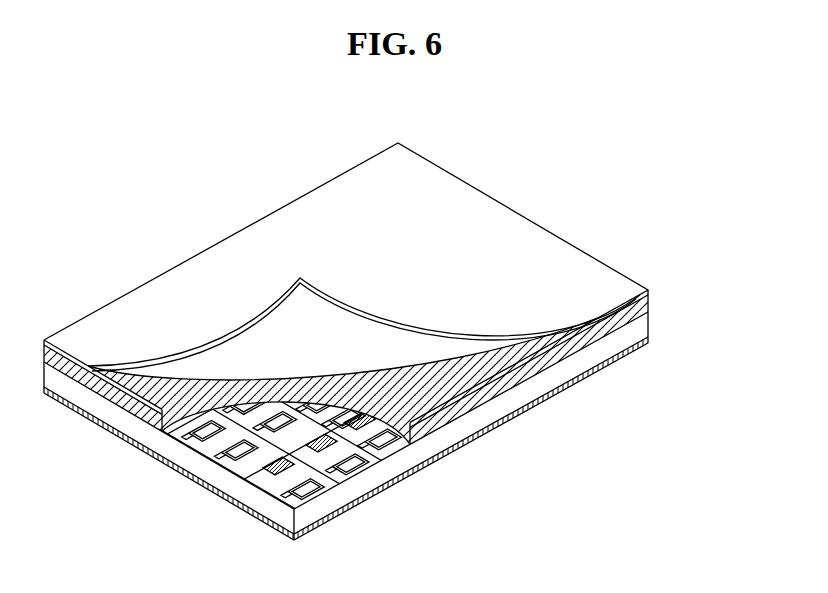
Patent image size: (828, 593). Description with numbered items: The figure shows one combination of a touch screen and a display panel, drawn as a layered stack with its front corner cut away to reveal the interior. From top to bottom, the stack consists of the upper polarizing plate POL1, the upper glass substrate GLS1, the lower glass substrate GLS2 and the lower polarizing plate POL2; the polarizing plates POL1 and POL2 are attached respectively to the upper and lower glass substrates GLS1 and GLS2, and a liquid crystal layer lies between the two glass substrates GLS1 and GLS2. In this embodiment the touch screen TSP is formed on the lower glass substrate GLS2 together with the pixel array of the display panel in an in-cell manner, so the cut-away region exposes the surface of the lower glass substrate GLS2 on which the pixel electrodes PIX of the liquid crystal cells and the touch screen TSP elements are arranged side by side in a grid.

The upper polarizing plate POL1 is at (648, 291).
The upper glass substrate GLS1 is at (648, 303).
The lower glass substrate GLS2 is at (640, 322).
The lower polarizing plate POL2 is at (648, 343).
The touch screen TSP is at (268, 472).
The pixel electrode PIX is at (288, 503).